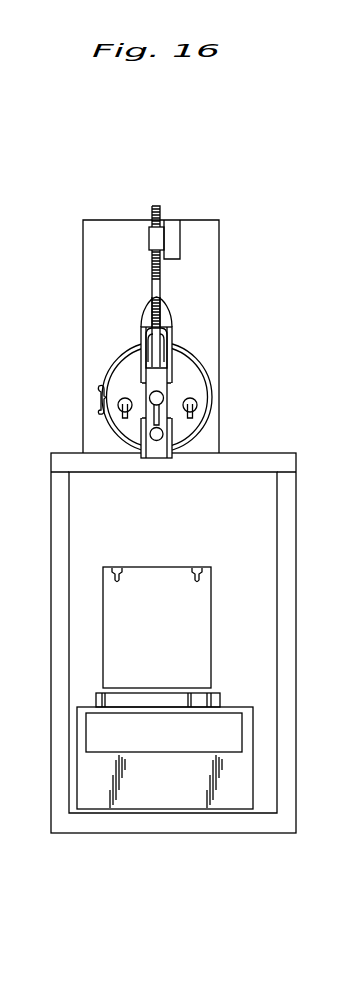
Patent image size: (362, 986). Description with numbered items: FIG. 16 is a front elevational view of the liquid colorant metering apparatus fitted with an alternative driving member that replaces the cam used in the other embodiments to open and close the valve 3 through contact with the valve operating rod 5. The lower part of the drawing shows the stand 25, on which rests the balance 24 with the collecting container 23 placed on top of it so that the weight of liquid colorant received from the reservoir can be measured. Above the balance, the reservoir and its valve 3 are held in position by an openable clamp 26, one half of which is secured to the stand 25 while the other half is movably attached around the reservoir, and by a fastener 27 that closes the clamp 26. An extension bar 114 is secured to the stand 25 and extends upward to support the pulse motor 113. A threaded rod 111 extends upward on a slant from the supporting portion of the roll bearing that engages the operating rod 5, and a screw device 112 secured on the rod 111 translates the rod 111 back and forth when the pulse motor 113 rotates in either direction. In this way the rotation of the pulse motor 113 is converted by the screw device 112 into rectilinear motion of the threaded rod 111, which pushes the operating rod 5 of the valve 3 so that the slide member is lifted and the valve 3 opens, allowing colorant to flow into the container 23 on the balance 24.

The valve 3 is at (156, 442).
The valve operating rod 5 is at (148, 332).
The collecting container 23 is at (211, 604).
The balance 24 is at (233, 707).
The stand 25 is at (51, 600).
The openable clamp 26 is at (125, 353).
The fastener 27 is at (97, 398).
The threaded rod 111 is at (160, 292).
The screw device 112 is at (149, 240).
The pulse motor 113 is at (172, 236).
The extension bar 114 is at (83, 310).